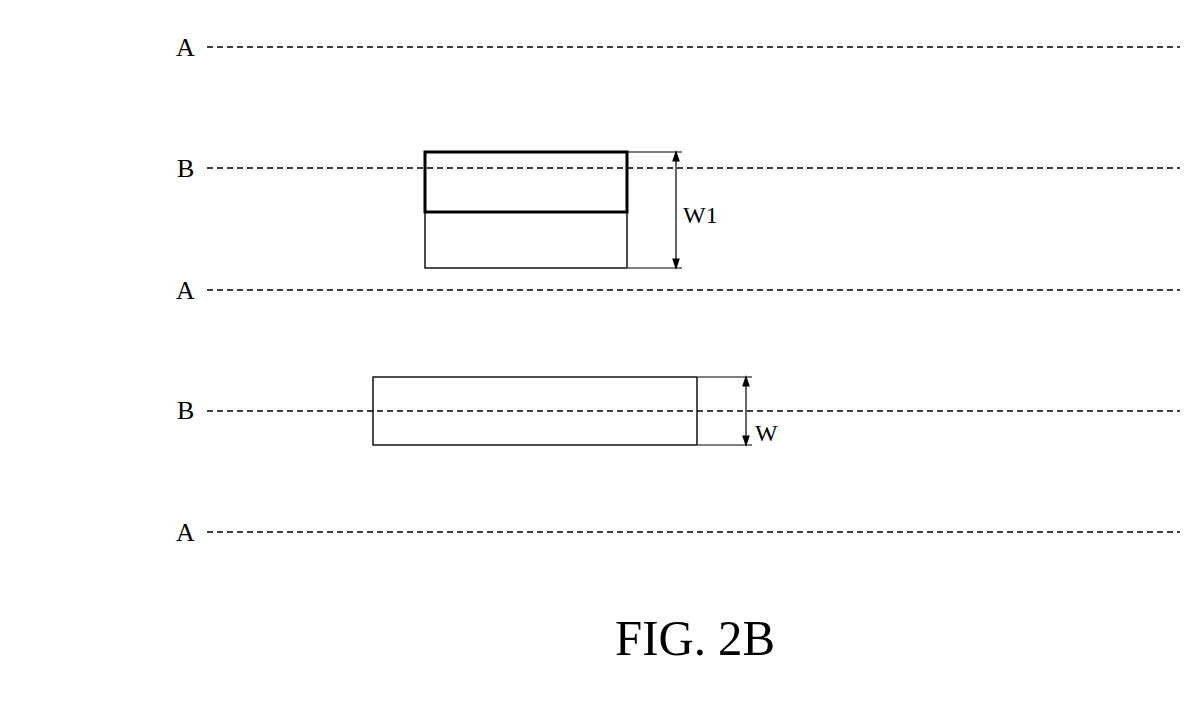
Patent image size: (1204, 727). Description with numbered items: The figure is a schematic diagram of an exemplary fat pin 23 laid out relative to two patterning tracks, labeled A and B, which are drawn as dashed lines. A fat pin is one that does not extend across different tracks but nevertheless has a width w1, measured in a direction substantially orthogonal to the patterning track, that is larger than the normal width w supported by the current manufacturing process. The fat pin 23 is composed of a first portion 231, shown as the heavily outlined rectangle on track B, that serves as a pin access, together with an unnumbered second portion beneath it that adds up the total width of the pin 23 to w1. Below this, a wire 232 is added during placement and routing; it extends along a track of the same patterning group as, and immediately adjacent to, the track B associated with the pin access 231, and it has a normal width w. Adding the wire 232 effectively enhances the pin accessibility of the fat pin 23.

The fat pin 23 is at (531, 168).
The first portion 231 is at (545, 196).
The wire 232 is at (514, 420).